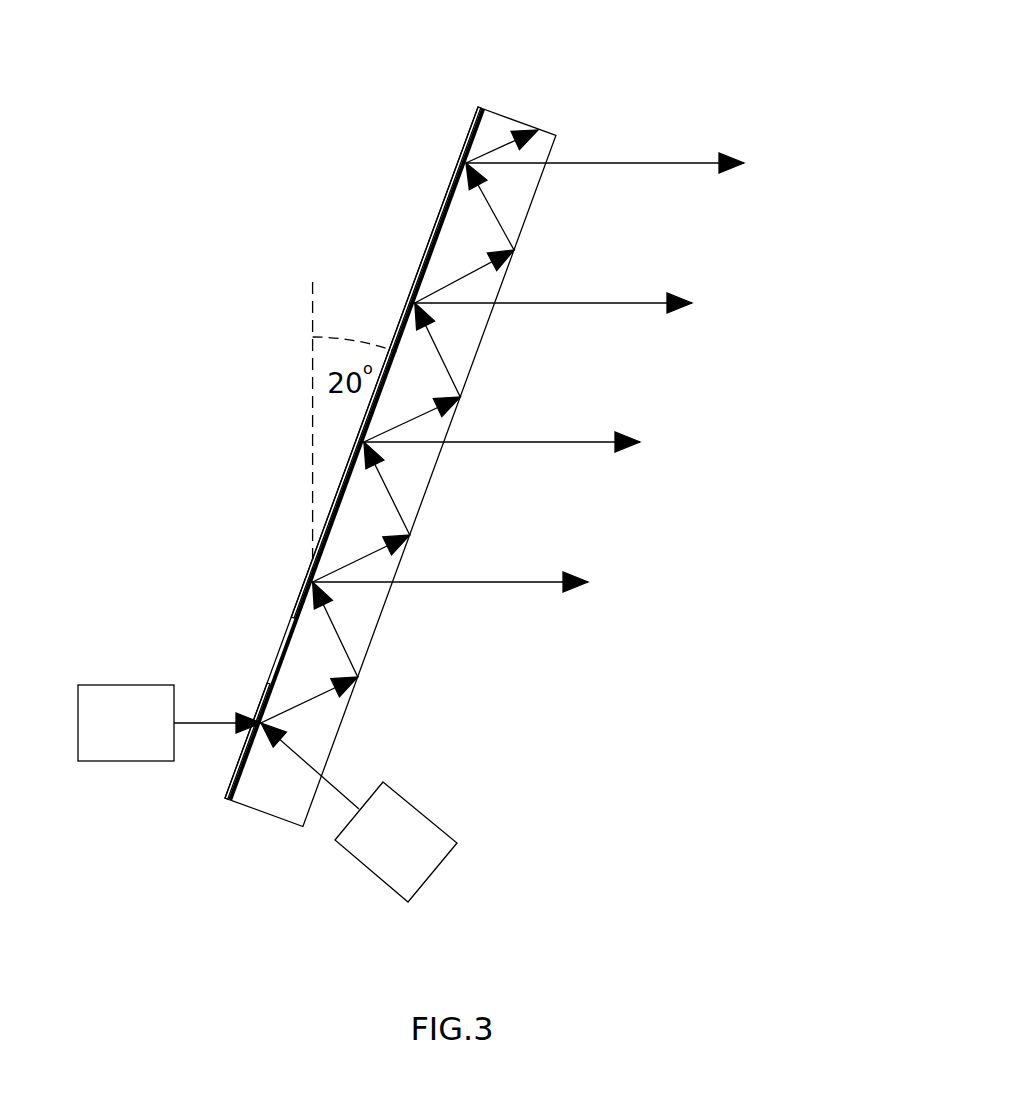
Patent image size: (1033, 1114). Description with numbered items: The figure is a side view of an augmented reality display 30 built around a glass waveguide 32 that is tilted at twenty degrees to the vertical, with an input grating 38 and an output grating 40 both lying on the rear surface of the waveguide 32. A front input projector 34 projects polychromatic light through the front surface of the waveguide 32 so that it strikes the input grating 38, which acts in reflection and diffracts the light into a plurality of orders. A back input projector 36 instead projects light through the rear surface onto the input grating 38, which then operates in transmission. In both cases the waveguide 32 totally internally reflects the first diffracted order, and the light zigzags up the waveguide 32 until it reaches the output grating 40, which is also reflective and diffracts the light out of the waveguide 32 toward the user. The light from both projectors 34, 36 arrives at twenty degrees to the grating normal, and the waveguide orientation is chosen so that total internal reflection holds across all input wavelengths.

The augmented reality display 30 is at (200, 385).
The glass waveguide 32 is at (512, 118).
The front input projector 34 is at (381, 862).
The back input projector 36 is at (111, 745).
The input grating 38 is at (262, 692).
The output grating 40 is at (448, 192).